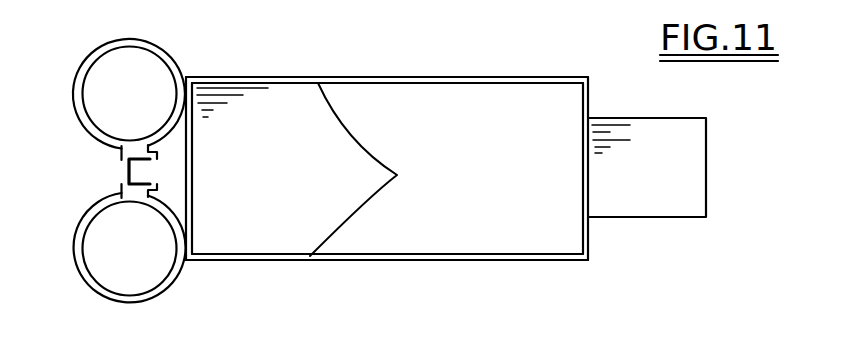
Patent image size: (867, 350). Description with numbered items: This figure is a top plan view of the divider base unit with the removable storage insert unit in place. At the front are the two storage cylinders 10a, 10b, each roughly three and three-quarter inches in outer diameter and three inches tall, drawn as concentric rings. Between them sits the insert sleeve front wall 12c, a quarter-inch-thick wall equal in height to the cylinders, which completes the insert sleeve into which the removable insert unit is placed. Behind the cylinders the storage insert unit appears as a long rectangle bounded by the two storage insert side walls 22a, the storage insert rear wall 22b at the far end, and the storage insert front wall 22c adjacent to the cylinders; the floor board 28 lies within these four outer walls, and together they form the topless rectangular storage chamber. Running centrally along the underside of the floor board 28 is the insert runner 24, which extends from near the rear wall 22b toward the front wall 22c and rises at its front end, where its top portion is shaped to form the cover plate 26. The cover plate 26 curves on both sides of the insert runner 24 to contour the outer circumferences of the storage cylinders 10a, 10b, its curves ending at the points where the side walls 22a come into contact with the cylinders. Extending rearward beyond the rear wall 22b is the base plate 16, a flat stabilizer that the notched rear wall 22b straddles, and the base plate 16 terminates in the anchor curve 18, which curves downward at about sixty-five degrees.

The storage cylinder 10a is at (135, 63).
The storage cylinder 10b is at (127, 280).
The insert sleeve front wall 12c is at (120, 170).
The insert runner 24 is at (128, 168).
The storage insert side wall 22a is at (385, 169).
The storage insert rear wall 22b is at (587, 207).
The storage insert front wall 22c is at (190, 203).
The cover plate 26 is at (172, 148).
The floor board 28 is at (518, 238).
The base plate 16 is at (652, 196).
The anchor curve 18 is at (687, 133).